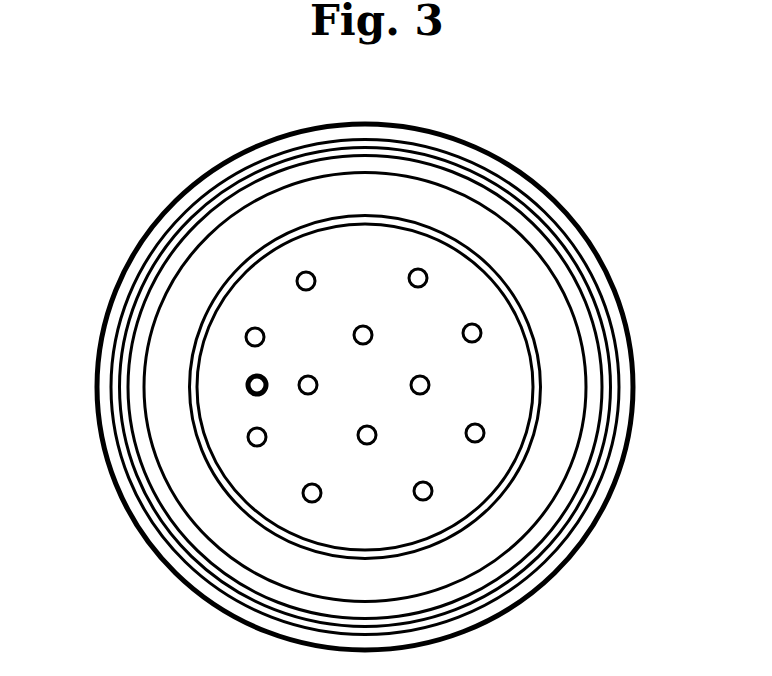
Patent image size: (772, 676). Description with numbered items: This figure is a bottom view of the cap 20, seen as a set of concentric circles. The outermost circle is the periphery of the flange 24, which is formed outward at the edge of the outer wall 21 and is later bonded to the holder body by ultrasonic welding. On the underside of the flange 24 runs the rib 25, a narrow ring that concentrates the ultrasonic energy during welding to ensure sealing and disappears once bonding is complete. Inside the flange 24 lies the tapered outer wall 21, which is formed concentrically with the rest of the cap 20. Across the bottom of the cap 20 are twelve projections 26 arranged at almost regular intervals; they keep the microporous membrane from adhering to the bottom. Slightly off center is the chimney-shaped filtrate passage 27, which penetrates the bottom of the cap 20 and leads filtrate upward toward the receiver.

The cap 20 is at (626, 198).
The outer wall 21 is at (158, 472).
The flange 24 is at (96, 412).
The rib 25 is at (615, 364).
The projections 26 is at (421, 270).
The filtrate passage 27 is at (249, 385).